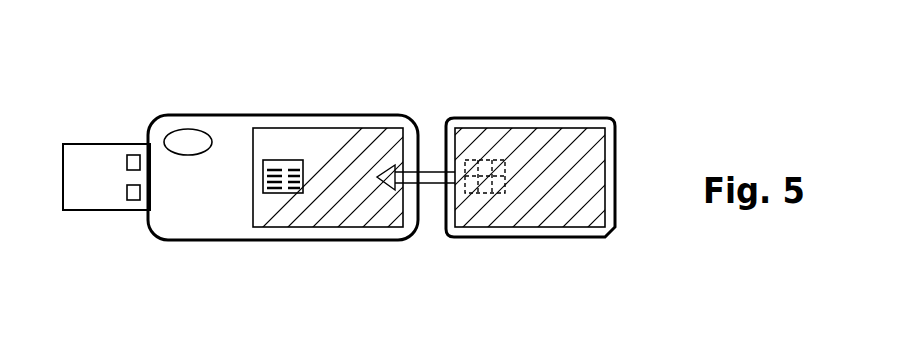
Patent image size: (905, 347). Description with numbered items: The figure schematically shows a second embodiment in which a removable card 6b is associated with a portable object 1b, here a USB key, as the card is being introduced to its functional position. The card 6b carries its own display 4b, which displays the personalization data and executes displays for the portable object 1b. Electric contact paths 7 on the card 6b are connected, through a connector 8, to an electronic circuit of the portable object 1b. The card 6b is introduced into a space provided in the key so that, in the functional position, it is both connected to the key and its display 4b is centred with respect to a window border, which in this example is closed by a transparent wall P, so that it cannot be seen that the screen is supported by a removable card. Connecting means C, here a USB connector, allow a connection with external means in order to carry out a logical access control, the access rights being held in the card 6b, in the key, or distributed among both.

The portable object 1b is at (152, 99).
The connecting means C is at (95, 144).
The connector 8 is at (290, 168).
The transparent wall P is at (278, 195).
The electric contact paths 7 is at (483, 160).
The card 6b is at (615, 148).
The display 4b is at (578, 218).